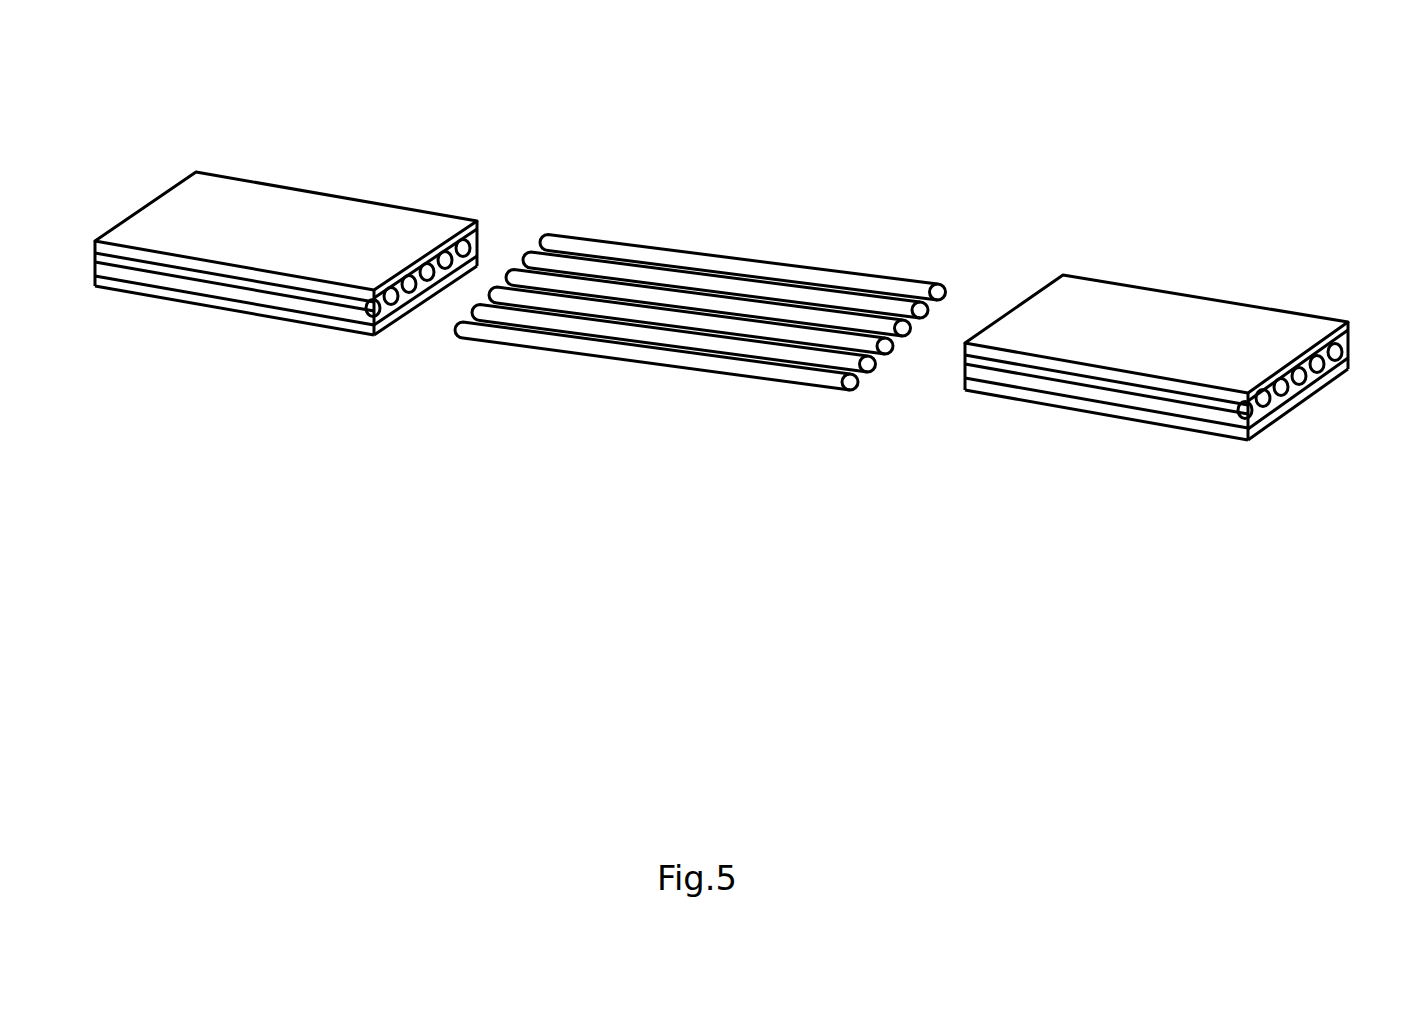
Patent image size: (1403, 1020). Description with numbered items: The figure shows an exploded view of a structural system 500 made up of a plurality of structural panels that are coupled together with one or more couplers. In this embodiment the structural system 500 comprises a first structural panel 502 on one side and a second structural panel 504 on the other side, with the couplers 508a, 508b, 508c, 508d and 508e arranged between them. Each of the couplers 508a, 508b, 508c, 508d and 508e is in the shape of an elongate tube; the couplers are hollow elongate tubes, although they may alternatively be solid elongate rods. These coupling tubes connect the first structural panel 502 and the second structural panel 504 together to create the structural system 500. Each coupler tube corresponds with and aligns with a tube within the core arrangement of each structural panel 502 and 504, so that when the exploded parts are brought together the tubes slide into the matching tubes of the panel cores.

The structural system 500 is at (930, 90).
The first structural panel 502 is at (260, 303).
The second structural panel 504 is at (1103, 417).
The coupler 508a is at (512, 328).
The coupler 508b is at (620, 320).
The coupler 508c is at (738, 317).
The coupler 508d is at (779, 288).
The coupler 508e is at (580, 233).